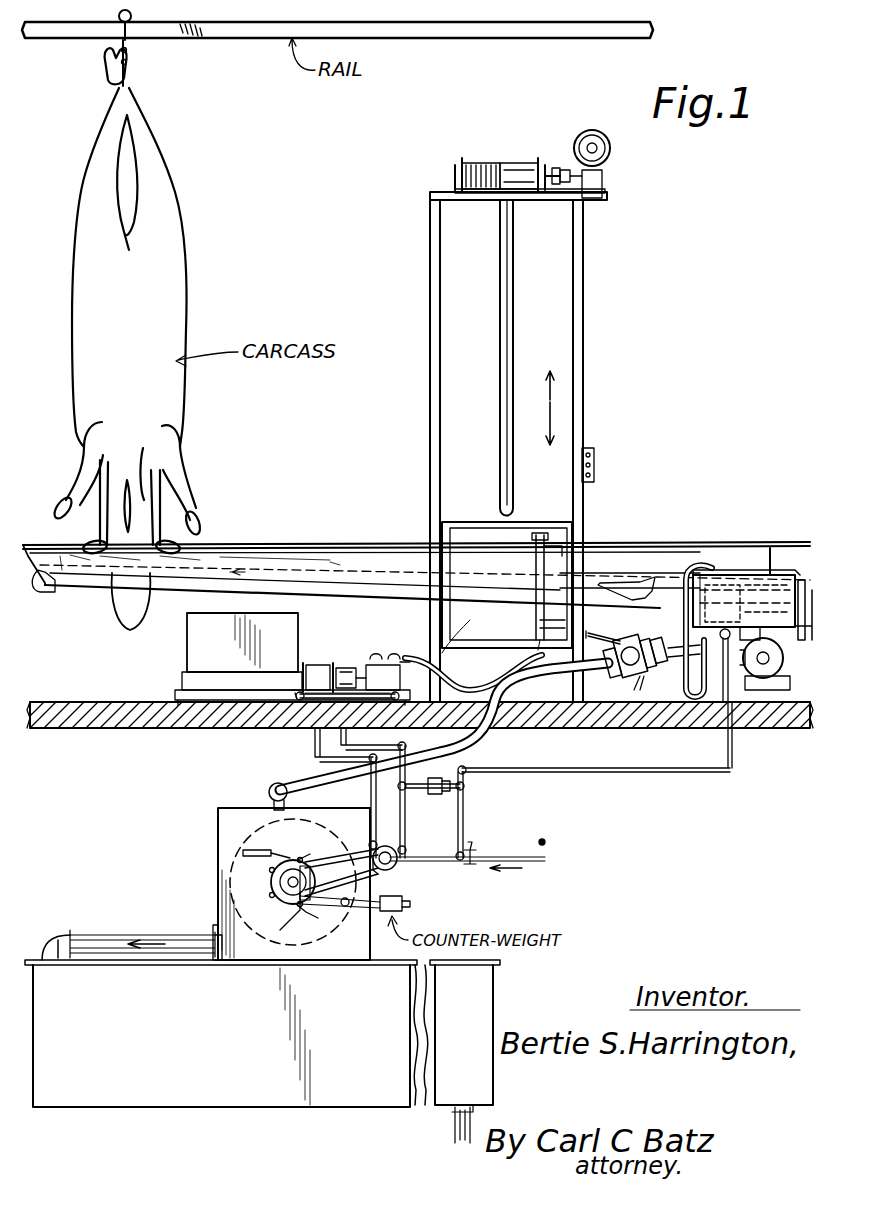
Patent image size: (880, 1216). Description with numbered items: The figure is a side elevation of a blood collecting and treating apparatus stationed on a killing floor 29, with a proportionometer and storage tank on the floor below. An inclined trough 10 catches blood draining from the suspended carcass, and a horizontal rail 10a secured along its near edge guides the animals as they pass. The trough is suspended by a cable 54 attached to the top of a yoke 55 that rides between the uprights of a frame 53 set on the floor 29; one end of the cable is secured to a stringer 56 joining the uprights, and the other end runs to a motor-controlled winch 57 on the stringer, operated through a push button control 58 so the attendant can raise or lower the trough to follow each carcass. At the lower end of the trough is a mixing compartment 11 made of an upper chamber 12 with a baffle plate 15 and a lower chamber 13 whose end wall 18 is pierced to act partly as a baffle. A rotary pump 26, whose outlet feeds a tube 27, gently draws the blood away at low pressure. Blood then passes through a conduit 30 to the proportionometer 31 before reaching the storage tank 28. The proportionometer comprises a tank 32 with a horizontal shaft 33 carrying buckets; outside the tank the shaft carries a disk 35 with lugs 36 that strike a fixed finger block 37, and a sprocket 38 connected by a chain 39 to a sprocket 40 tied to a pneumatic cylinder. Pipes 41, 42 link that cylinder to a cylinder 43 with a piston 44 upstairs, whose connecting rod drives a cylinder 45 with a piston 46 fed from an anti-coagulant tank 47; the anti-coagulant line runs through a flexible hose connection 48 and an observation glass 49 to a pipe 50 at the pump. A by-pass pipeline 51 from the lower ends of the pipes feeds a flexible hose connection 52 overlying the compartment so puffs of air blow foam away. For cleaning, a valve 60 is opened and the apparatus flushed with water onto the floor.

The trough 10 is at (360, 563).
The horizontal rail 10a is at (252, 545).
The mixing compartment 11 is at (752, 578).
The upper chamber 12 is at (776, 598).
The lower chamber 13 is at (752, 618).
The baffle plate 15 is at (728, 590).
The end wall 18 is at (706, 612).
The pump 26 is at (752, 678).
The tube 27 is at (165, 600).
The storage tank 28 is at (207, 1095).
The floor 29 is at (200, 730).
The conduit 30 is at (592, 670).
The proportionometer 31 is at (208, 838).
The tank 32 is at (232, 808).
The shaft 33 is at (290, 902).
The disk 35 is at (270, 883).
The lugs 36 is at (300, 858).
The finger block 37 is at (282, 852).
The sprocket 38 is at (305, 866).
The chain 39 is at (348, 860).
The sprocket 40 is at (392, 866).
The pipe 41 is at (370, 796).
The pipe 42 is at (405, 820).
The cylinder 43 is at (315, 664).
The piston 44 is at (345, 668).
The cylinder 45 is at (375, 656).
The piston 46 is at (396, 656).
The tank 47 is at (205, 652).
The flexible hose connection 48 is at (450, 678).
The observation glass 49 is at (532, 553).
The pipe 50 is at (808, 642).
The pipeline 51 is at (582, 772).
The flexible hose connection 52 is at (684, 688).
The upright frame 53 is at (598, 363).
The cable 54 is at (516, 378).
The yoke 55 is at (535, 524).
The stringer 56 is at (527, 198).
The motor-controlled winch 57 is at (512, 157).
The push button control 58 is at (596, 468).
The valve 60 is at (639, 690).